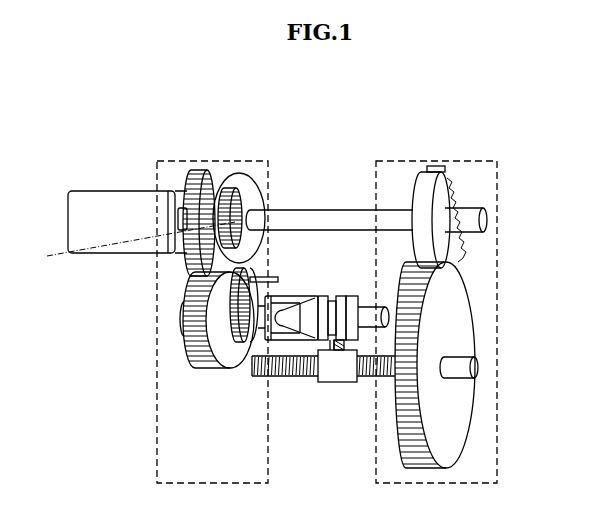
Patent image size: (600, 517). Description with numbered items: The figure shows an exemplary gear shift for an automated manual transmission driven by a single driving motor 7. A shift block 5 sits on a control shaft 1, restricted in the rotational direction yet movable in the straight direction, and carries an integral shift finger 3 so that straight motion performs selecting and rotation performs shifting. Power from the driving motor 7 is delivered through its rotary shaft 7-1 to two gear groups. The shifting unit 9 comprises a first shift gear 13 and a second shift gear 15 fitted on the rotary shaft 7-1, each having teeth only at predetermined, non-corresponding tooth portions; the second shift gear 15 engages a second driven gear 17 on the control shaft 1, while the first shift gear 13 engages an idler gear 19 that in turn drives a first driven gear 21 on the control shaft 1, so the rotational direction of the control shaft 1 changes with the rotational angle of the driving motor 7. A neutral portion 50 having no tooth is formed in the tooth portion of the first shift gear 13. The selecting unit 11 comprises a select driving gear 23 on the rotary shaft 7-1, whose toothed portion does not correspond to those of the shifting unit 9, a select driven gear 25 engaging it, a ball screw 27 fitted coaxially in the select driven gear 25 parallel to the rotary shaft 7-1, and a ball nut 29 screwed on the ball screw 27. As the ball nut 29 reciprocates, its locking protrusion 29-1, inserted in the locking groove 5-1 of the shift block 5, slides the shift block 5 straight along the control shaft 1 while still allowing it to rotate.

The control shaft 1 is at (366, 310).
The shift finger 3 is at (293, 300).
The shift block 5 is at (313, 296).
The locking groove 5-1 is at (338, 310).
The driving motor 7 is at (100, 200).
The rotary shaft 7-1 is at (470, 208).
The shifting unit 9 is at (157, 417).
The selecting unit 11 is at (497, 452).
The first shift gear 13 is at (240, 176).
The second shift gear 15 is at (200, 172).
The second driven gear 17 is at (190, 335).
The idler gear 19 is at (210, 262).
The first driven gear 21 is at (243, 345).
The select driving gear 23 is at (440, 166).
The select driven gear 25 is at (460, 412).
The ball screw 27 is at (300, 378).
The ball nut 29 is at (335, 383).
The locking protrusion 29-1 is at (340, 352).
The neutral portion 50 is at (131, 243).